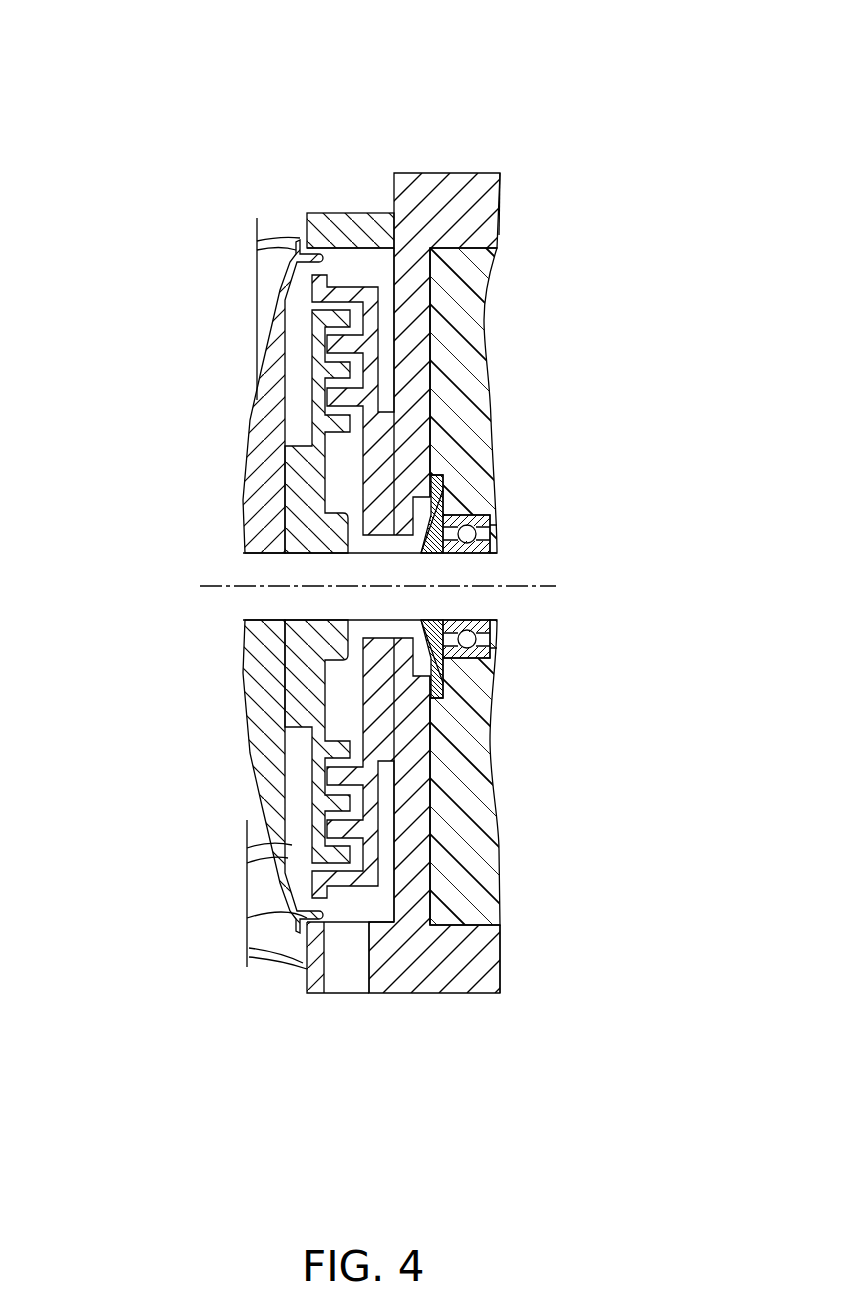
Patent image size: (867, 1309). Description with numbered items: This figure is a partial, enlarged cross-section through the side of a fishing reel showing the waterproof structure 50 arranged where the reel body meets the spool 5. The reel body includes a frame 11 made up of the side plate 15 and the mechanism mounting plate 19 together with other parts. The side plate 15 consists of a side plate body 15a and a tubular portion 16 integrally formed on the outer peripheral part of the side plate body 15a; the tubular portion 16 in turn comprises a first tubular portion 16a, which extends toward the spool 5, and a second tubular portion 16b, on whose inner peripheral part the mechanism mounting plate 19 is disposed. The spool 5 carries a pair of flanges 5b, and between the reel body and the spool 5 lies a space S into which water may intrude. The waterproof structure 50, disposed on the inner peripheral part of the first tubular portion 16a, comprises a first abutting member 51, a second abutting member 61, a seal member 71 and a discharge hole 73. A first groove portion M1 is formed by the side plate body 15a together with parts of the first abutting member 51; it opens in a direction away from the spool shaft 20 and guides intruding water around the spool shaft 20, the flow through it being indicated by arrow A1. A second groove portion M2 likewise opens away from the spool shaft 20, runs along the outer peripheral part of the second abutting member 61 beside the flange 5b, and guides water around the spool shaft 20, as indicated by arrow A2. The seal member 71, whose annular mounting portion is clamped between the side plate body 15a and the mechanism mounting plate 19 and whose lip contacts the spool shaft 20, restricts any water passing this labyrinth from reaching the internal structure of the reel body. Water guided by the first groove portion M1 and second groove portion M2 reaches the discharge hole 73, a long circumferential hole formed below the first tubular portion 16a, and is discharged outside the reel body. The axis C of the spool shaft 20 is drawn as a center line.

The side plate 15 is at (433, 612).
The frame 11 is at (433, 612).
The tubular portion 16 is at (433, 607).
The first tubular portion 16a is at (350, 603).
The second tubular portion 16b is at (447, 183).
The side plate body 15a is at (415, 281).
The waterproof structure 50 is at (222, 170).
The space S is at (347, 256).
The second groove portion M2 is at (197, 589).
The second air flow A2 is at (302, 338).
The first groove portion M1 is at (538, 582).
The first air flow A1 is at (394, 338).
The second abutting member 61 is at (293, 414).
The flange 5b is at (268, 434).
The spool 5 is at (195, 586).
The first abutting member 51 is at (473, 393).
The mechanism mounting plate 19 is at (399, 376).
The seal member 71 is at (459, 498).
The central axis C is at (376, 587).
The spool shaft 20 is at (478, 603).
The discharge hole 73 is at (330, 960).